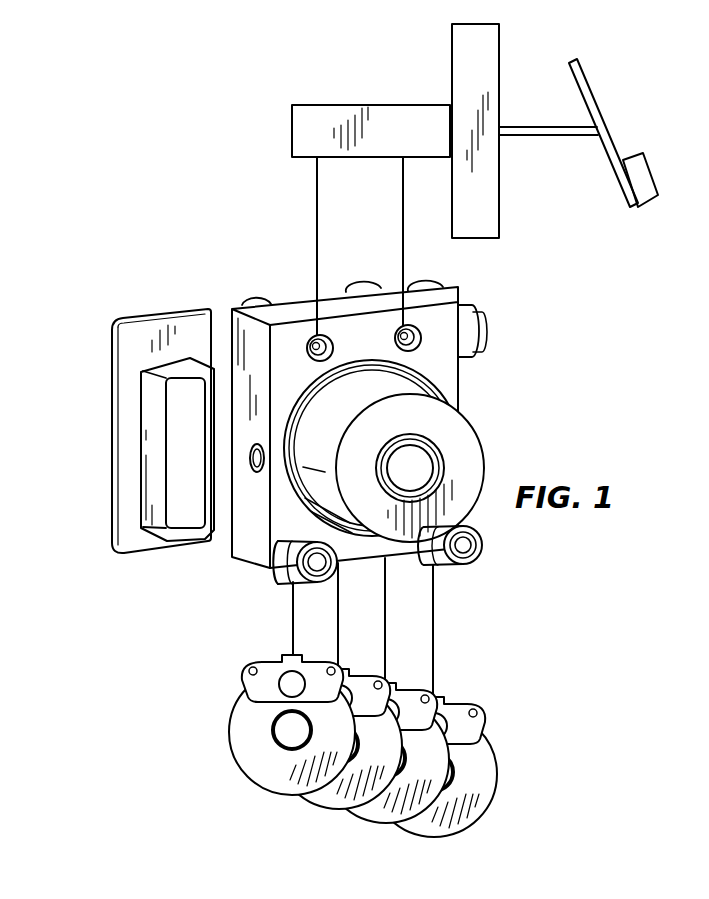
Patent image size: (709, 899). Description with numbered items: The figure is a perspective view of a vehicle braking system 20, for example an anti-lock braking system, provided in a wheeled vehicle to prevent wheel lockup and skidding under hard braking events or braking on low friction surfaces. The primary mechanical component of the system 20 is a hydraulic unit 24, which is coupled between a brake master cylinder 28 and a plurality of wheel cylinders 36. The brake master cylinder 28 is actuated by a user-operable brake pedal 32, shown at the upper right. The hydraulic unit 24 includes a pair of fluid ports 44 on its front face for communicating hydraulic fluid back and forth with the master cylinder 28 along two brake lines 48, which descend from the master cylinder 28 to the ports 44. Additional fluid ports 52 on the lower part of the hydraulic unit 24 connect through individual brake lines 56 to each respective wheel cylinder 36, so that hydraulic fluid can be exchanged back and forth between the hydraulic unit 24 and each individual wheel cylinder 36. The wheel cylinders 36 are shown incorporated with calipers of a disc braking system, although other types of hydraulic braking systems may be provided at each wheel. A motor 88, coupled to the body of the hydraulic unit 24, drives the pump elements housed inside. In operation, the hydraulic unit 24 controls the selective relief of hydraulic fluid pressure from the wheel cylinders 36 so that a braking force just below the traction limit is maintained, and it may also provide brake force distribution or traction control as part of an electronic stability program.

The braking system 20 is at (162, 186).
The hydraulic unit 24 is at (526, 349).
The brake master cylinder 28 is at (359, 84).
The brake pedal 32 is at (650, 172).
The wheel cylinders 36 is at (252, 692).
The fluid ports 44 is at (328, 337).
The brake lines 48 is at (403, 232).
The fluid ports 52 is at (348, 568).
The brake lines 56 is at (338, 612).
The motor 88 is at (462, 444).